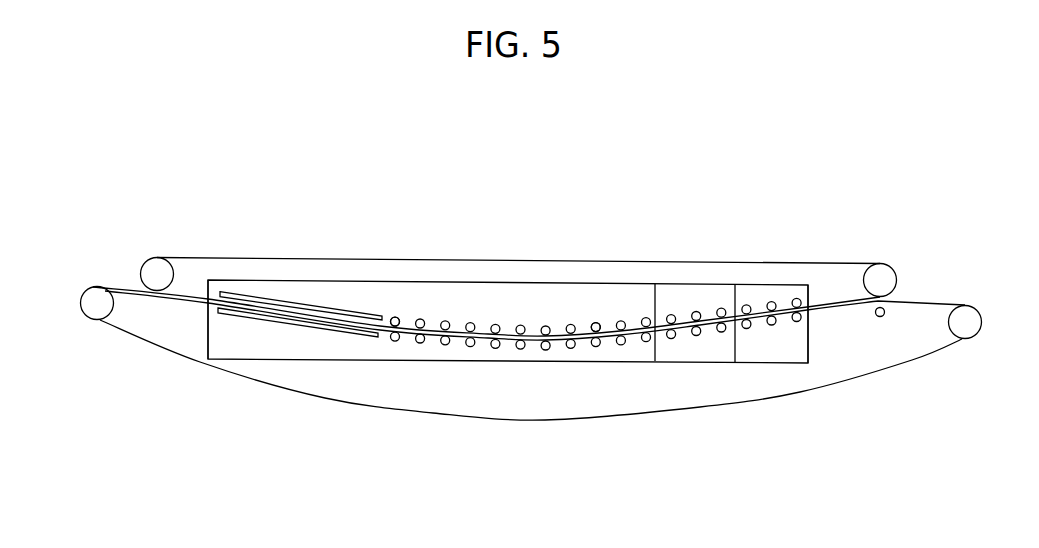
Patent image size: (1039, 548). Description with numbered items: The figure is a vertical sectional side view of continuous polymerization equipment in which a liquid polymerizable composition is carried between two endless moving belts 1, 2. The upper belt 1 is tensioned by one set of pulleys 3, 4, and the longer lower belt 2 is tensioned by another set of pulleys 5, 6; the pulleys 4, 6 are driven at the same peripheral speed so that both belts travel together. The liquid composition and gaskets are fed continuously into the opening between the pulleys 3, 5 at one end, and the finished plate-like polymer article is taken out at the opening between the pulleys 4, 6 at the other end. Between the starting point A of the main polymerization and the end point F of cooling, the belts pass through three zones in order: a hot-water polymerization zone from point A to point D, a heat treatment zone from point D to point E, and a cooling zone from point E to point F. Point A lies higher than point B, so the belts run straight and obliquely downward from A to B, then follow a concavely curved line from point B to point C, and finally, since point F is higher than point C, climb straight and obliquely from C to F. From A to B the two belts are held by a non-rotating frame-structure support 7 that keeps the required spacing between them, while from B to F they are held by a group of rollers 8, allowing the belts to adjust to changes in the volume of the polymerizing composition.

The moving belt 1 is at (355, 259).
The moving belt 2 is at (326, 398).
The pulley 3 is at (152, 260).
The pulley 4 is at (885, 265).
The pulley 5 is at (92, 287).
The pulley 6 is at (972, 305).
The support 7 is at (281, 291).
The roller 8 is at (545, 458).
The point A is at (206, 297).
The point B is at (389, 319).
The point C is at (604, 325).
The point D is at (653, 317).
The point E is at (735, 315).
The point F is at (808, 307).